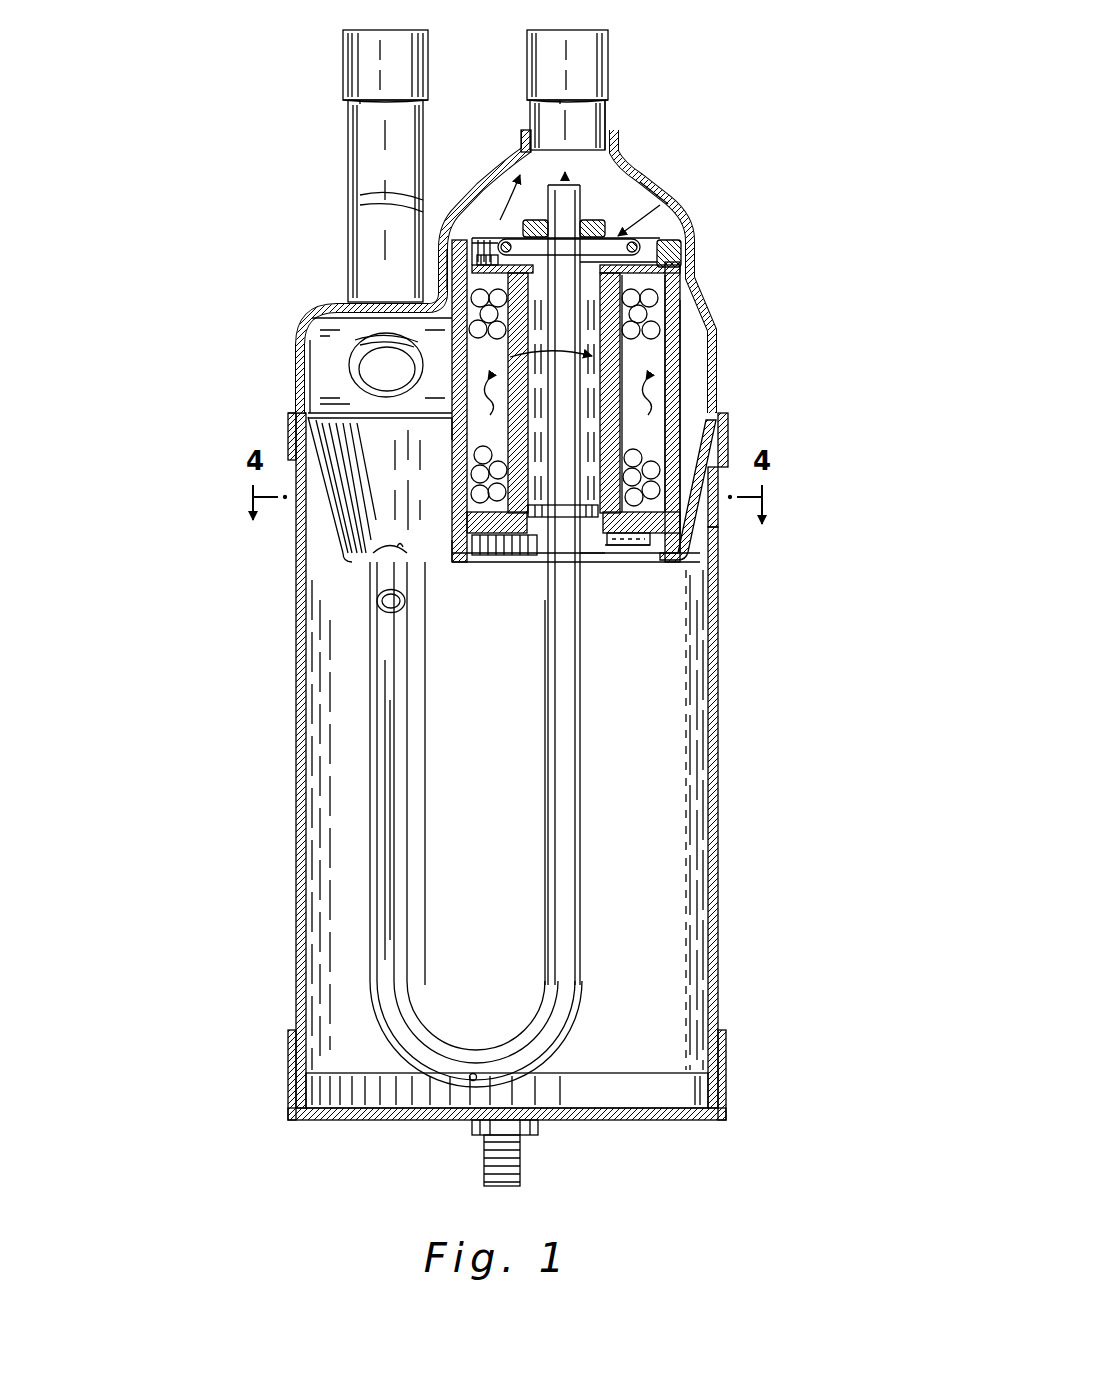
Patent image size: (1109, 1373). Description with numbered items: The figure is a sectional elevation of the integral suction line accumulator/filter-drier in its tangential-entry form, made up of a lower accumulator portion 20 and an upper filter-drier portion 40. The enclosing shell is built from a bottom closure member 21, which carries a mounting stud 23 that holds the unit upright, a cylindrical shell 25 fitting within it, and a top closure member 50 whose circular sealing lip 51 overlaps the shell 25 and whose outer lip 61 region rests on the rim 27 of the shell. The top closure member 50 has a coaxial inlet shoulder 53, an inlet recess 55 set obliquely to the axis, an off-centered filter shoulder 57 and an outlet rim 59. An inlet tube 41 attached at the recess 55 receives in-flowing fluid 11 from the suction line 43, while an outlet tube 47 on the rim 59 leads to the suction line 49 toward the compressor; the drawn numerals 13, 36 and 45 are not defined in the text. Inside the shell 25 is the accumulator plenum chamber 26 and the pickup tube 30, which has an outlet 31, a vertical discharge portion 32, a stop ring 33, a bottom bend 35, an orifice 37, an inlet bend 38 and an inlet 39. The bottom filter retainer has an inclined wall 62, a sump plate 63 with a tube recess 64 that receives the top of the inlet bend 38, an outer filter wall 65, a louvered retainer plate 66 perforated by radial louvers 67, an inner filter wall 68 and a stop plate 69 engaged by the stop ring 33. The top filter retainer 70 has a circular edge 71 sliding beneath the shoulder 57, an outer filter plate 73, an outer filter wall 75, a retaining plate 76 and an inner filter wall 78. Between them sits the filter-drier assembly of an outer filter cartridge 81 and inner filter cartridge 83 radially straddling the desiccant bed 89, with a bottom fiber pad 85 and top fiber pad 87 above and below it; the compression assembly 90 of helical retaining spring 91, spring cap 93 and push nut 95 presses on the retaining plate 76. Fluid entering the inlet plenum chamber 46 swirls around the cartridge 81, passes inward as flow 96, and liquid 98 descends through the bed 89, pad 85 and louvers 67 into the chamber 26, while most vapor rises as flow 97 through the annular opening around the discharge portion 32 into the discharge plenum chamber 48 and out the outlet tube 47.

The in-flowing fluid 11 is at (385, 18).
The outlet flow arrow 13 is at (565, 18).
The accumulator portion 20 is at (770, 713).
The bottom closure member 21 is at (364, 1120).
The mounting stud 23 is at (520, 1158).
The cylindrical shell 25 is at (297, 925).
The accumulator plenum chamber 26 is at (712, 870).
The rim 27 is at (718, 410).
The pickup tube 30 is at (584, 718).
The outlet 31 is at (560, 150).
The vertical discharge portion 32 is at (580, 820).
The stop ring 33 is at (641, 473).
The bottom bend 35 is at (515, 1085).
The tube leg 36 is at (398, 835).
The orifice 37 is at (473, 1072).
The inlet bend 38 is at (372, 582).
The inlet 39 is at (405, 607).
The filter-drier portion 40 is at (770, 250).
The inlet tube 41 is at (350, 135).
The suction line 43 is at (343, 70).
The inlet opening 45 is at (365, 372).
The inlet plenum chamber 46 is at (385, 462).
The outlet tube 47 is at (606, 120).
The discharge plenum chamber 48 is at (645, 188).
The suction line 49 is at (608, 68).
The top closure member 50 is at (718, 370).
The circular sealing lip 51 is at (728, 425).
The coaxial inlet shoulder 53 is at (312, 323).
The inlet recess 55 is at (438, 408).
The filter shoulder 57 is at (452, 220).
The outlet rim 59 is at (521, 145).
The outer lip 61 is at (298, 413).
The inclined wall 62 is at (348, 562).
The sump plate 63 is at (392, 556).
The tube recess 64 is at (390, 548).
The outer filter wall 65 is at (648, 548).
The louvered retainer plate 66 is at (455, 563).
The louvers 67 is at (620, 548).
The inner filter wall 68 is at (520, 556).
The stop plate 69 is at (605, 556).
The top filter retainer 70 is at (425, 208).
The circular edge 71 is at (683, 262).
The outer filter plate 73 is at (682, 246).
The outer filter wall 75 is at (662, 246).
The retaining plate 76 is at (382, 325).
The inner filter wall 78 is at (600, 393).
The outer filter cartridge 81 is at (695, 330).
The inner filter cartridge 83 is at (452, 517).
The bottom fiber pad 85 is at (475, 545).
The top fiber pad 87 is at (685, 274).
The desiccant bed 89 is at (650, 308).
The compression assembly 90 is at (660, 205).
The helical retaining spring 91 is at (512, 245).
The spring cap 93 is at (592, 220).
The push nut 95 is at (532, 220).
The flow 96 is at (452, 418).
The flow 97 is at (535, 393).
The liquid 98 is at (470, 425).